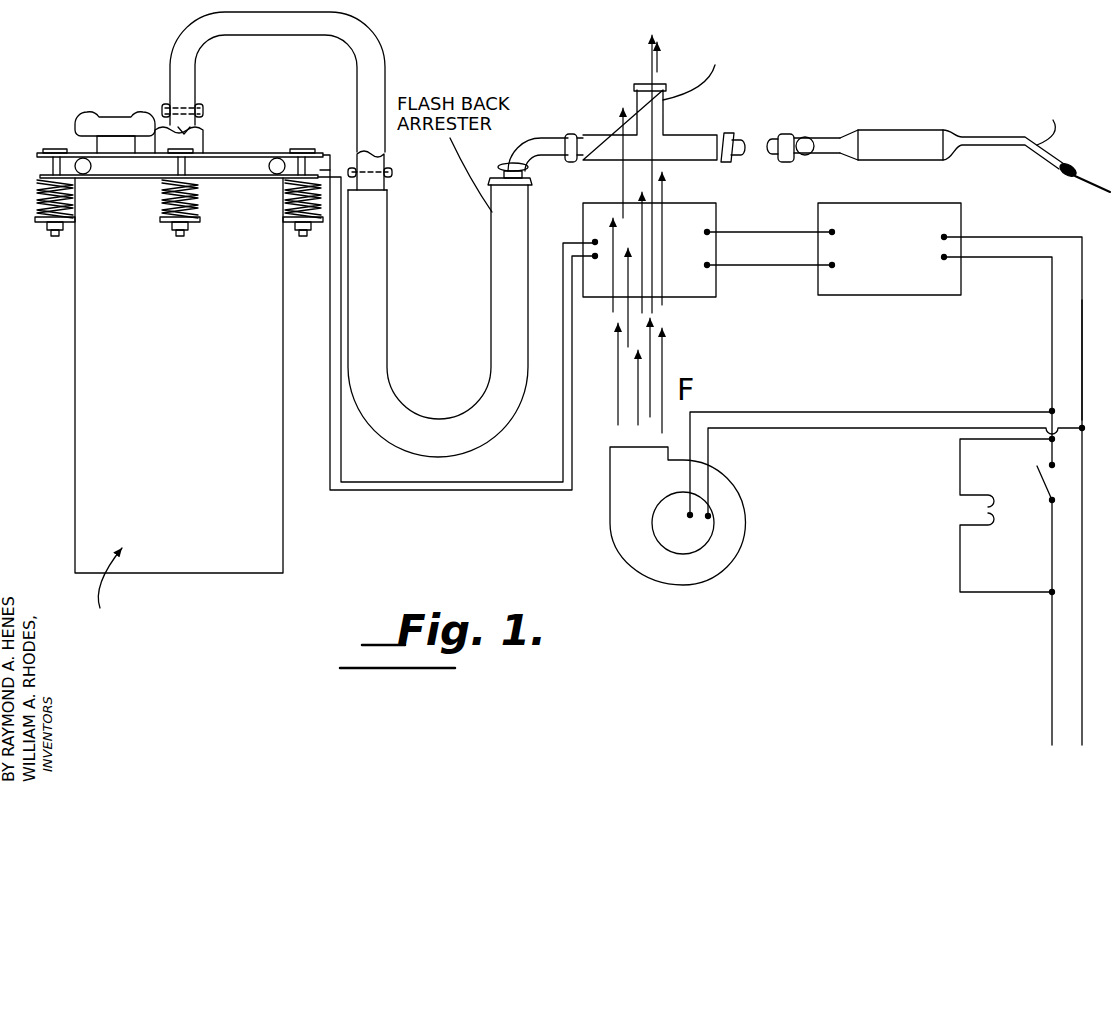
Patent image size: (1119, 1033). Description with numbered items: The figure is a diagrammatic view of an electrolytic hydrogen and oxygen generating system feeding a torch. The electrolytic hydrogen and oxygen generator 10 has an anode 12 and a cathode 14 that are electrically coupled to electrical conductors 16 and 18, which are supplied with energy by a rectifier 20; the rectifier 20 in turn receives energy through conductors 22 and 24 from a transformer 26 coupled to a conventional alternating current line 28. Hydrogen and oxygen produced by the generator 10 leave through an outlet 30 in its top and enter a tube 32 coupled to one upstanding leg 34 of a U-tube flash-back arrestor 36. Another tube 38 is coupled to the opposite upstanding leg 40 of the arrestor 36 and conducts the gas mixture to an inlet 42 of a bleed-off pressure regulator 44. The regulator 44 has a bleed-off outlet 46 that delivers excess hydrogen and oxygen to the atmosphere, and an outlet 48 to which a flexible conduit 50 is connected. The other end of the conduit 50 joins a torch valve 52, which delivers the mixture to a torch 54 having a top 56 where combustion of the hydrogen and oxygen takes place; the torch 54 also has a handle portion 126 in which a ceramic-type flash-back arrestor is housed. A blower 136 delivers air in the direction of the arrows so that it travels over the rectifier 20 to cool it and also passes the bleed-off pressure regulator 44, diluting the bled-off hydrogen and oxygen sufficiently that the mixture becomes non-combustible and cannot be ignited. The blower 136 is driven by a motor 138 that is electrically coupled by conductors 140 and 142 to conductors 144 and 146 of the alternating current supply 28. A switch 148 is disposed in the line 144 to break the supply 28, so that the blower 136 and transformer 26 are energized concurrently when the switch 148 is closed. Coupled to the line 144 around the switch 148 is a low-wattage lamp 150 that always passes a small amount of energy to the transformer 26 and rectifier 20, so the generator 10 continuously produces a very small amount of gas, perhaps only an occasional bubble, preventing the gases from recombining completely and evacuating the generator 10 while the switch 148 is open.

The electrolytic hydrogen and oxygen generator 10 is at (90, 355).
The anode 12 is at (286, 153).
The cathode 14 is at (268, 178).
The electrical conductor 16 is at (342, 360).
The electrical conductor 18 is at (330, 370).
The rectifier 20 is at (707, 283).
The conductor 22 is at (768, 232).
The conductor 24 is at (770, 265).
The transformer 26 is at (911, 264).
The alternating current line 28 is at (1032, 243).
The outlet 30 is at (195, 130).
The tube 32 is at (375, 76).
The upstanding leg 34 is at (372, 194).
The U-tube flash-back arrestor 36 is at (372, 298).
The tube 38 is at (540, 145).
The upstanding leg 40 is at (510, 202).
The inlet 42 is at (585, 145).
The bleed-off pressure regulator 44 is at (642, 128).
The bleed-off outlet 46 is at (655, 85).
The outlet 48 is at (723, 135).
The flexible conduit 50 is at (765, 156).
The torch valve 52 is at (800, 136).
The torch 54 is at (1010, 136).
The top 56 is at (1062, 165).
The handle portion 126 is at (912, 134).
The blower 136 is at (715, 503).
The motor 138 is at (715, 538).
The conductor 140 is at (907, 411).
The conductor 142 is at (960, 428).
The conductor 144 is at (1052, 330).
The conductor 146 is at (1082, 335).
The switch 148 is at (1037, 487).
The lamp 150 is at (989, 510).